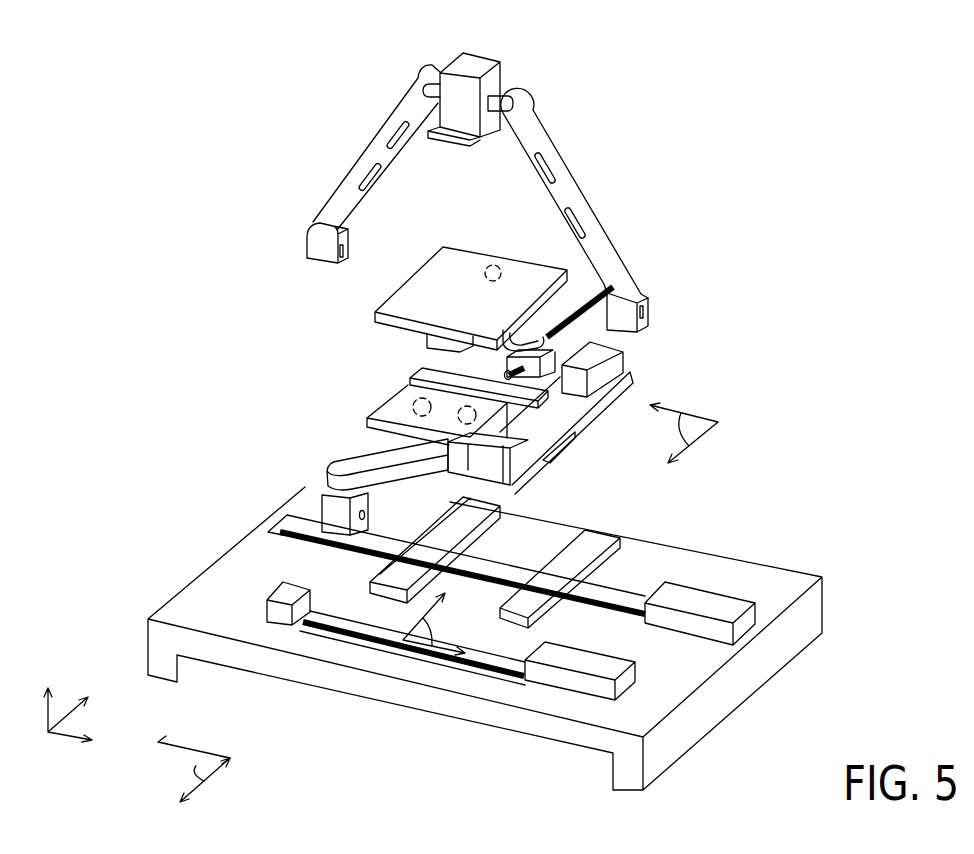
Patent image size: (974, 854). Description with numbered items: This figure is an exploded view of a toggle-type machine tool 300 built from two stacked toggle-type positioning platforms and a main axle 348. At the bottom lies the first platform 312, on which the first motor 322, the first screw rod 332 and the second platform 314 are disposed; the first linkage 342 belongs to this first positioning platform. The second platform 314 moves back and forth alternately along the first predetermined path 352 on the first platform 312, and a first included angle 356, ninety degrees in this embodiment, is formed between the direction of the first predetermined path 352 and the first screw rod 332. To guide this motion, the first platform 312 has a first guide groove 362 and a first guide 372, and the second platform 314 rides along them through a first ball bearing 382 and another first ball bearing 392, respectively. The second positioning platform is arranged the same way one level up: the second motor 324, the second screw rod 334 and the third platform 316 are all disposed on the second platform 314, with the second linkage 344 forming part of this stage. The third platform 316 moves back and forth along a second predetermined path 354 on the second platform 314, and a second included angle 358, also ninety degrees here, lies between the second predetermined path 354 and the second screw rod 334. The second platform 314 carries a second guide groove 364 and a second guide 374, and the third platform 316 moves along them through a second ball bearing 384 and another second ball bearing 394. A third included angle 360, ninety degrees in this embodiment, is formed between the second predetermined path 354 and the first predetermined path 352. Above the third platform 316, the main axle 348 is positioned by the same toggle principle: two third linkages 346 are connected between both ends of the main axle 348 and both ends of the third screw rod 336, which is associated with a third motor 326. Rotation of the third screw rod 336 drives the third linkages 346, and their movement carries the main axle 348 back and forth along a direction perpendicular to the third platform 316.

The toggle-type machine tool 300 is at (950, 670).
The first platform 312 is at (800, 580).
The second platform 314 is at (420, 380).
The third platform 316 is at (407, 295).
The first motor 322 is at (600, 667).
The second motor 324 is at (610, 352).
The third motor 326 is at (722, 600).
The first screw rod 332 is at (302, 620).
The second screw rod 334 is at (613, 290).
The third screw rod 336 is at (613, 605).
The first linkage 342 is at (328, 478).
The second linkage 344 is at (527, 337).
The third linkages 346 is at (530, 100).
The main axle 348 is at (463, 120).
The first predetermined path 352 is at (211, 786).
The second predetermined path 354 is at (194, 741).
The first included angle 356 is at (438, 624).
The second included angle 358 is at (681, 430).
The third included angle 360 is at (193, 766).
The first guide groove 362 is at (393, 588).
The second guide groove 364 is at (413, 370).
The first guide 372 is at (502, 612).
The second guide 374 is at (403, 404).
The first ball bearing 382 is at (418, 412).
The second ball bearing 384 is at (493, 265).
The first ball bearing 392 is at (478, 420).
The second ball bearing 394 is at (407, 367).